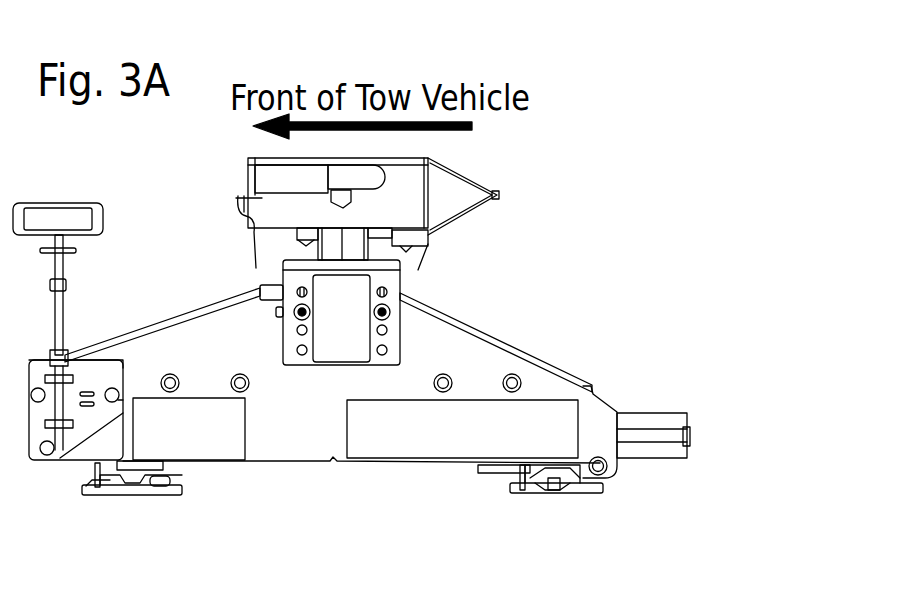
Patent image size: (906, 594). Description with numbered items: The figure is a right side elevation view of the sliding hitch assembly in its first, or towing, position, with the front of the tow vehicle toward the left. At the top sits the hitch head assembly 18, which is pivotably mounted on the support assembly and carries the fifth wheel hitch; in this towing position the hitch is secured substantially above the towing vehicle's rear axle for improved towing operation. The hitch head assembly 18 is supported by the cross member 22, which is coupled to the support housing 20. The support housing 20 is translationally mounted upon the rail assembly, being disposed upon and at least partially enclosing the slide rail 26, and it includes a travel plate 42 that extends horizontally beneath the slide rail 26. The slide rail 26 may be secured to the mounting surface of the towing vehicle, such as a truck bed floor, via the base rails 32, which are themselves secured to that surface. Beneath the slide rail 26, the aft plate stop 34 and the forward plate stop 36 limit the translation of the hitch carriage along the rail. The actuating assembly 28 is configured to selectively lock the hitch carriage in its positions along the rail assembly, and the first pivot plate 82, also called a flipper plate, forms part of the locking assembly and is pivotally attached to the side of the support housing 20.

The hitch head assembly 18 is at (466, 190).
The support housing 20 is at (503, 343).
The cross member 22 is at (402, 281).
The slide rail 26 is at (693, 438).
The actuating assembly 28 is at (80, 321).
The base rail 32 is at (103, 490).
The aft plate stop 34 is at (543, 483).
The forward plate stop 36 is at (160, 467).
The travel plate 42 is at (270, 463).
The first pivot plate 82 is at (517, 472).